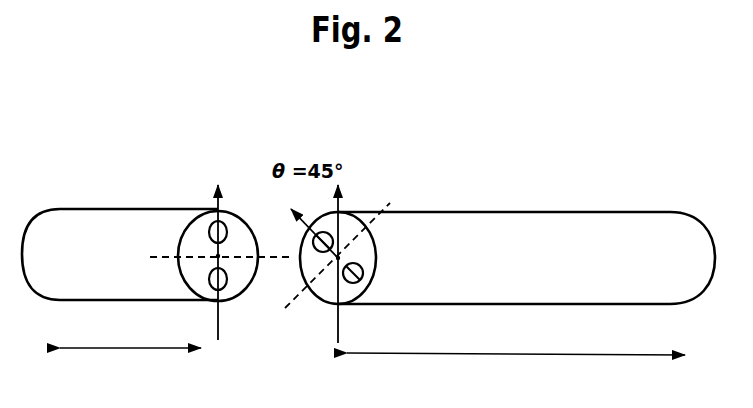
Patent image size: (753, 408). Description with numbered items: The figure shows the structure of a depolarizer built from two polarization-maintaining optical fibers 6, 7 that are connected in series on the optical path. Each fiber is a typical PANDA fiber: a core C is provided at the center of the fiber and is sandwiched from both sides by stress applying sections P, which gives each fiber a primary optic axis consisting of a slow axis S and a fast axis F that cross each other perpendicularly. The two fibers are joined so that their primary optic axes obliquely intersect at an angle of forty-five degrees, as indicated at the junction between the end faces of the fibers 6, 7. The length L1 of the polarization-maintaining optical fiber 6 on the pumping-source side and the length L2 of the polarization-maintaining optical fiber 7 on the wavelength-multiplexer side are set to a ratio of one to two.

The polarization-maintaining optical fiber 6 is at (113, 219).
The polarization-maintaining optical fiber 7 is at (572, 223).
The stress applying sections P is at (227, 228).
The slow axis S is at (393, 315).
The core C is at (217, 256).
The fast axis F is at (263, 237).
The length of the polarization-maintaining optical fiber 6 L1 is at (130, 368).
The length of the polarization-maintaining optical fiber 7 L2 is at (516, 373).